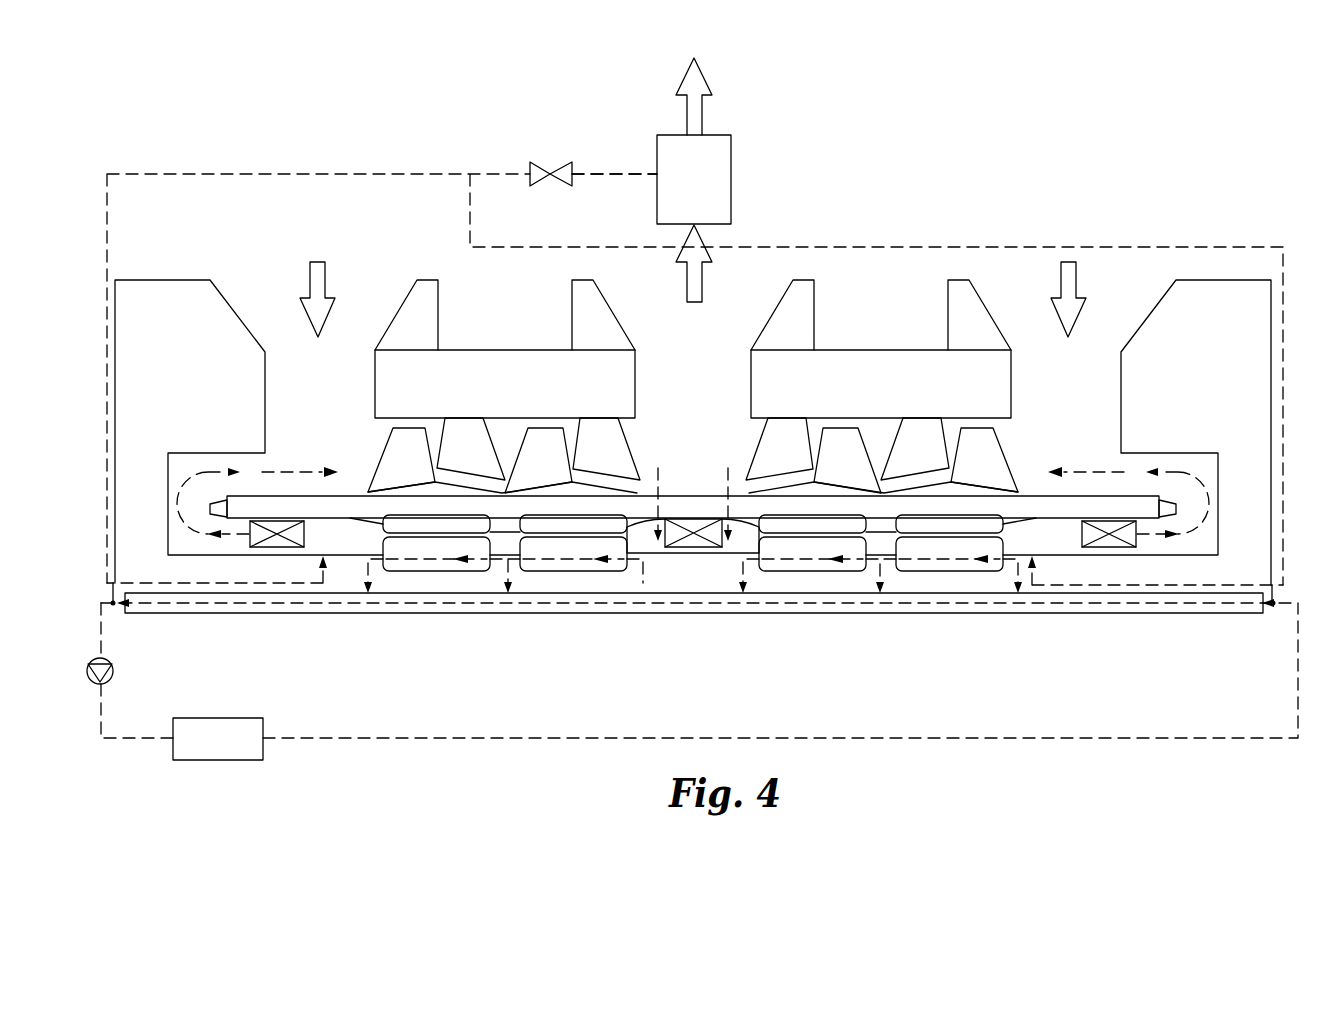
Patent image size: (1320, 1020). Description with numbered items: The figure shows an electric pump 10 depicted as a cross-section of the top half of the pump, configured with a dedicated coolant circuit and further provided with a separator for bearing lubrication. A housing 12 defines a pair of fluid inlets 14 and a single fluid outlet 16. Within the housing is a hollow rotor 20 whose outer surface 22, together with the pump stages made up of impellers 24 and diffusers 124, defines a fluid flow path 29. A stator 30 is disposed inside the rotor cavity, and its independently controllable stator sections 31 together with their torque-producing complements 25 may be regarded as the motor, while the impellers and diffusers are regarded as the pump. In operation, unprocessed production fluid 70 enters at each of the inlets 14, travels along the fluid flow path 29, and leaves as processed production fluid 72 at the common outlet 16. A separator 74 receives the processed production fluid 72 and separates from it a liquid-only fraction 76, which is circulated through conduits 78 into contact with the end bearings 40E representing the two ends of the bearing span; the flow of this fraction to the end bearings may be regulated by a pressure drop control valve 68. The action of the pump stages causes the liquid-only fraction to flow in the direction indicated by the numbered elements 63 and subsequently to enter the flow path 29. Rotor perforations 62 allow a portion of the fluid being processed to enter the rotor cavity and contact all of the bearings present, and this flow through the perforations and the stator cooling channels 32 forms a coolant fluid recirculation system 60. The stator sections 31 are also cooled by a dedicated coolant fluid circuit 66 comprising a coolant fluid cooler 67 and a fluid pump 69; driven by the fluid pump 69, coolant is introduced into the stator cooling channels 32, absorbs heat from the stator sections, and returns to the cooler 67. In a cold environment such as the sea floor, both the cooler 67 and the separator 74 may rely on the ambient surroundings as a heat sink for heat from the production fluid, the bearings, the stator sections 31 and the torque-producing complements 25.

The electric pump 10 is at (131, 143).
The housing 12 is at (182, 388).
The fluid inlets 14 is at (285, 367).
The fluid outlet 16 is at (653, 350).
The hollow rotor 20 is at (1068, 518).
The outer surface 22 is at (1030, 497).
The impellers 24 is at (390, 473).
The diffusers 124 is at (445, 455).
The torque-producing complements 25 is at (595, 524).
The fluid flow path 29 is at (292, 472).
The stator 30 is at (670, 585).
The independently controllable stator sections 31 is at (422, 564).
The stator cooling channels 32 is at (547, 560).
The end bearings 40E is at (257, 548).
The coolant fluid recirculation system 60 is at (215, 535).
The rotor perforations 62 is at (658, 468).
The direction of flow indicators 63 is at (178, 514).
The dedicated coolant fluid circuit 66 is at (1050, 740).
The coolant fluid cooler 67 is at (205, 750).
The pressure drop control valve 68 is at (531, 167).
The fluid pump 69 is at (113, 678).
The unprocessed production fluid 70 is at (317, 277).
The processed production fluid 72 is at (702, 290).
The separator 74 is at (681, 193).
The liquid-only fraction 76 is at (623, 174).
The conduits 78 is at (346, 174).